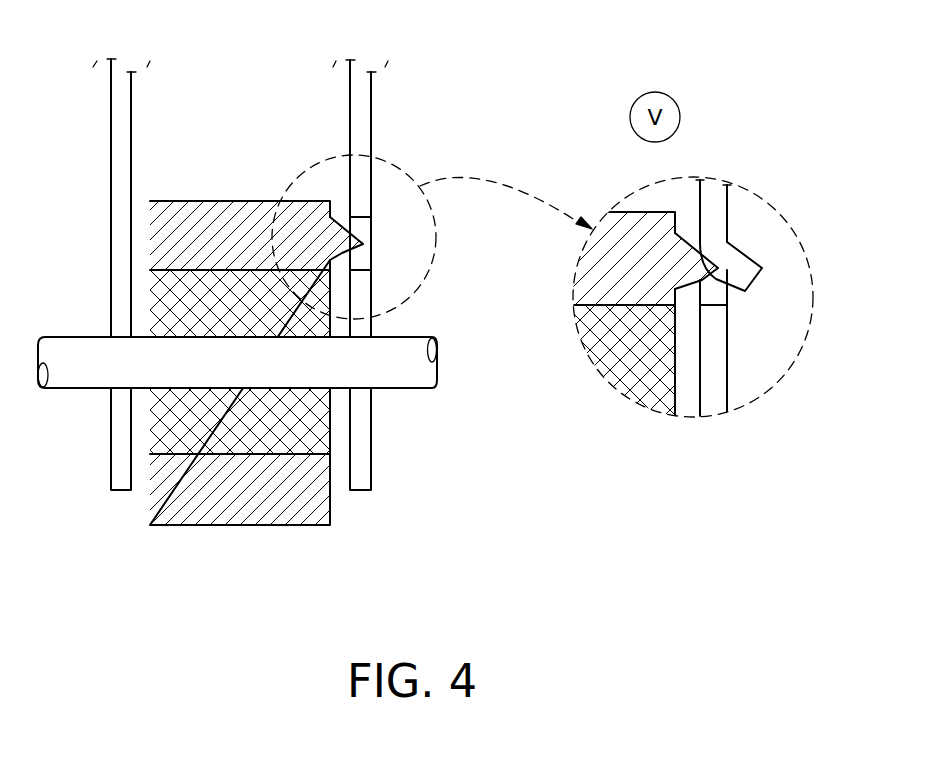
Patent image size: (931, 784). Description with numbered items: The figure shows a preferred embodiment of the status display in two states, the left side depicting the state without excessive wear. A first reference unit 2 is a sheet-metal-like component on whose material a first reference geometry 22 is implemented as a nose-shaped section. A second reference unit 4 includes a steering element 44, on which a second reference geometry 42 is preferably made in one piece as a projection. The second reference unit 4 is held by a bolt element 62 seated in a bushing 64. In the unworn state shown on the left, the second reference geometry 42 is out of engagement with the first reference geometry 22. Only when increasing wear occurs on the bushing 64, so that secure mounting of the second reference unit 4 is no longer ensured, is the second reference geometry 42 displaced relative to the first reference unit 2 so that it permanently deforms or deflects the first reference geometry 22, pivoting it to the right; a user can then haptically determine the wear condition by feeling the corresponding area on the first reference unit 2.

The first reference unit 2 is at (385, 89).
The first reference geometry 22 is at (358, 207).
The second reference unit 4 is at (203, 186).
The second reference geometry 42 is at (338, 240).
The steering element 44 is at (290, 507).
The bolt element 62 is at (375, 375).
The bushing 64 is at (297, 427).